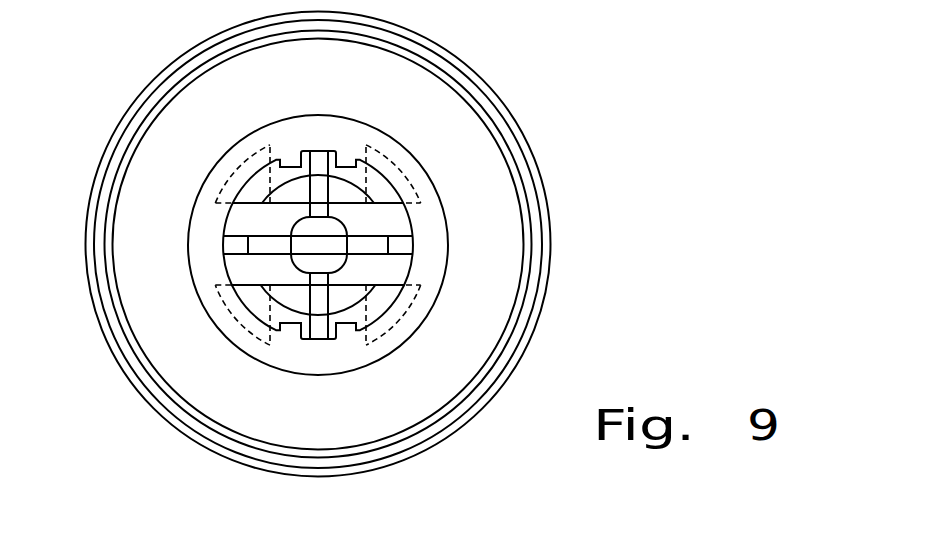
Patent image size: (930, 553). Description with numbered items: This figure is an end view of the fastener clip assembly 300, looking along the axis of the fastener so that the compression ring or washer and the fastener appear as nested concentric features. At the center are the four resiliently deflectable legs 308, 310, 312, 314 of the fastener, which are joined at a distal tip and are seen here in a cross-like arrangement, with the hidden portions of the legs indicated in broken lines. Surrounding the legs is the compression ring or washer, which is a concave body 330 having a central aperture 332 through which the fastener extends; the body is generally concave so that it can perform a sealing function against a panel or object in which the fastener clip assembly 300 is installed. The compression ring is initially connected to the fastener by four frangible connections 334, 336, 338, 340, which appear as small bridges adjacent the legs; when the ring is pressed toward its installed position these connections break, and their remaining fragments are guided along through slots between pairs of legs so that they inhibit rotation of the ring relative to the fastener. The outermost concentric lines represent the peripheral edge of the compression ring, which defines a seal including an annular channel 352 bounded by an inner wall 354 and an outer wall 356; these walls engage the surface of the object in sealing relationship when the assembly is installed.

The fastener clip assembly 300 is at (118, 83).
The resiliently deflectable leg 308 is at (235, 312).
The resiliently deflectable leg 310 is at (238, 168).
The resiliently deflectable leg 312 is at (382, 160).
The resiliently deflectable leg 314 is at (397, 318).
The concave body 330 is at (447, 240).
The aperture 332 is at (393, 188).
The frangible connection 334 is at (343, 330).
The frangible connection 336 is at (288, 330).
The frangible connection 338 is at (290, 163).
The frangible connection 340 is at (345, 160).
The annular channel 352 is at (538, 232).
The inner wall 354 is at (523, 195).
The outer wall 356 is at (548, 268).